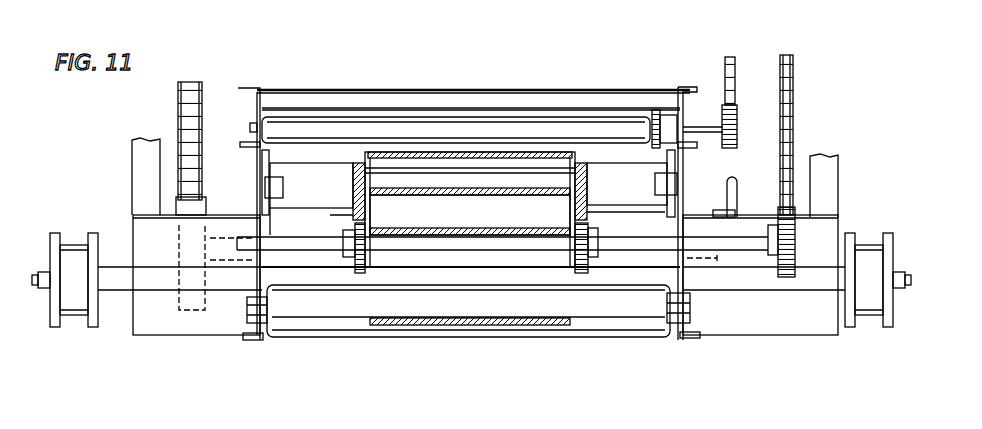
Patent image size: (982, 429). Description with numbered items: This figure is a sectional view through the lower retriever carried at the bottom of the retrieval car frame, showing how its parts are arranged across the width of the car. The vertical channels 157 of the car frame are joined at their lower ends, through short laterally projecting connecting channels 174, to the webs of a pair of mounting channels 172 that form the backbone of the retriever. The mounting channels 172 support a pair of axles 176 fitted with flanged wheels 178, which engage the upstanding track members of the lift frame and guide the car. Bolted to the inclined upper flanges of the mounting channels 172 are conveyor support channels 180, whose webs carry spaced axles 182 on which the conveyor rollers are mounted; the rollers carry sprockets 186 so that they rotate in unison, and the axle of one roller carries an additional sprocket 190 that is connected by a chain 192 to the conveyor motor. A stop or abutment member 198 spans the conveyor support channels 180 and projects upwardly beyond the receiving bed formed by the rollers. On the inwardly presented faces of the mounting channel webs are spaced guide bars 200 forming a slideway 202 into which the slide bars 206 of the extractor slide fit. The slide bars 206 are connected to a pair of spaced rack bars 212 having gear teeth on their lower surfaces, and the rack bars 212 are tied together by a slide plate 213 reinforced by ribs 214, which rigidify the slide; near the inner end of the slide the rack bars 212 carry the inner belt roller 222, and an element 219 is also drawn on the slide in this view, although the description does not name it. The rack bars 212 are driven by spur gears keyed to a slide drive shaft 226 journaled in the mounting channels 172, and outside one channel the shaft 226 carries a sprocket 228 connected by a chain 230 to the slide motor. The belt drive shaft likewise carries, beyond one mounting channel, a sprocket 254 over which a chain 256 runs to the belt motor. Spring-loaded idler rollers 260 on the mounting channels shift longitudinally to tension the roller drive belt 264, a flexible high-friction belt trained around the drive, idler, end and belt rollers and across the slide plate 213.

The channel 157 is at (143, 163).
The mounting channel 172 is at (260, 340).
The connecting channel 174 is at (157, 320).
The axle 176 is at (117, 297).
The flanged wheel 178 is at (70, 235).
The conveyor support channel 180 is at (247, 88).
The axle 182 is at (713, 133).
The sprocket 186 is at (653, 117).
The additional sprocket 190 is at (737, 135).
The chain 192 is at (737, 67).
The stop or abutment member 198 is at (405, 92).
The guide bar 200 is at (270, 163).
The slideway 202 is at (263, 172).
The slide bar 206 is at (265, 190).
The rack bar 212 is at (353, 185).
The slide plate 213 is at (540, 163).
The rib 214 is at (470, 209).
The outer sleeve 219 is at (458, 165).
The inner belt roller 222 is at (487, 223).
The slide drive shaft 226 is at (642, 250).
The sprocket 228 is at (778, 272).
The chain 230 is at (795, 102).
The sprocket 254 is at (207, 320).
The chain 256 is at (178, 88).
The spring-loaded idler roller 260 is at (493, 311).
The roller drive belt 264 is at (423, 325).